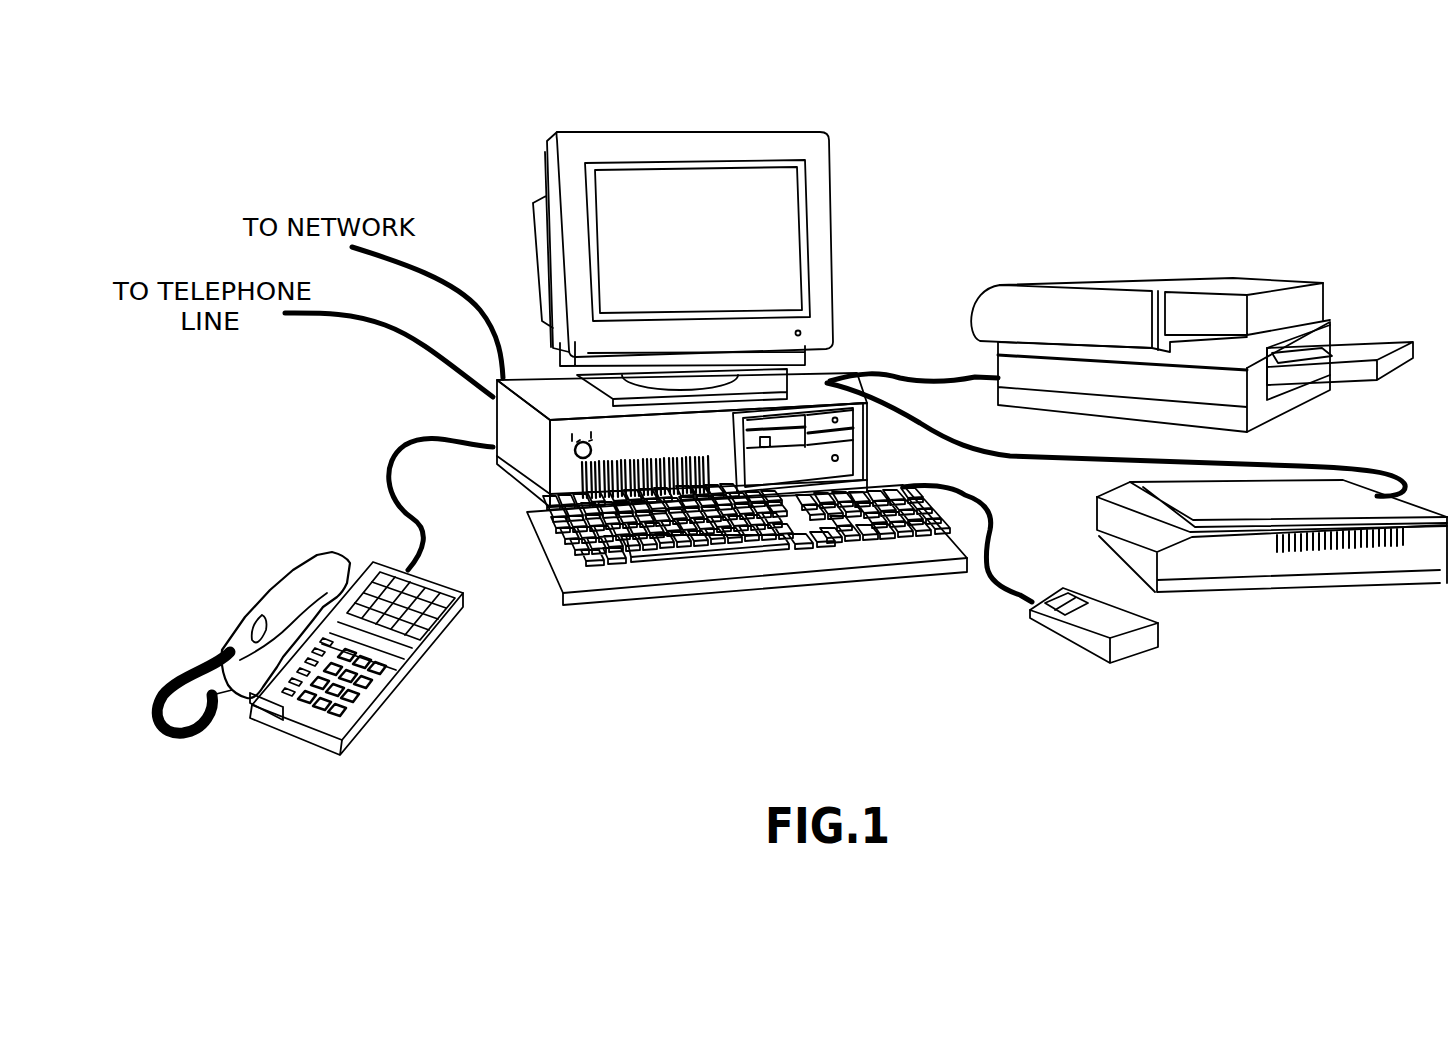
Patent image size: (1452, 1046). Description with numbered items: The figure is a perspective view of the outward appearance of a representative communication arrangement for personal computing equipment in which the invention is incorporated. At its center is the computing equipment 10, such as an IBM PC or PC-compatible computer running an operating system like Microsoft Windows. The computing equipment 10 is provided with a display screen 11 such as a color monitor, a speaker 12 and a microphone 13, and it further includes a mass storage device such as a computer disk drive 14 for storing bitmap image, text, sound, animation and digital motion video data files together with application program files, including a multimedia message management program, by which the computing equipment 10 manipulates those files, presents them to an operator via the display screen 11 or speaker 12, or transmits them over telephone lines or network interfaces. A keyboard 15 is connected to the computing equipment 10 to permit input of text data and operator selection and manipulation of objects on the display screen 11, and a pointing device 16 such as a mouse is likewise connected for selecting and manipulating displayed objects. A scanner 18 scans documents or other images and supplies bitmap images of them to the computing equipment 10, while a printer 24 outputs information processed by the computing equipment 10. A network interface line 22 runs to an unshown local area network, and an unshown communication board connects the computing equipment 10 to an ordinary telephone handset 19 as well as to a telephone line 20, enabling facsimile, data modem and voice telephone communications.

The computing equipment 10 is at (930, 205).
The display screen 11 is at (717, 131).
The speaker 12 is at (640, 467).
The microphone 13 is at (575, 457).
The computer disk drive 14 is at (837, 438).
The keyboard 15 is at (627, 577).
The pointing device 16 is at (1128, 653).
The scanner 18 is at (1307, 582).
The telephone handset 19 is at (383, 726).
The telephone line 20 is at (335, 315).
The network interface line 22 is at (458, 297).
The printer 24 is at (1112, 280).